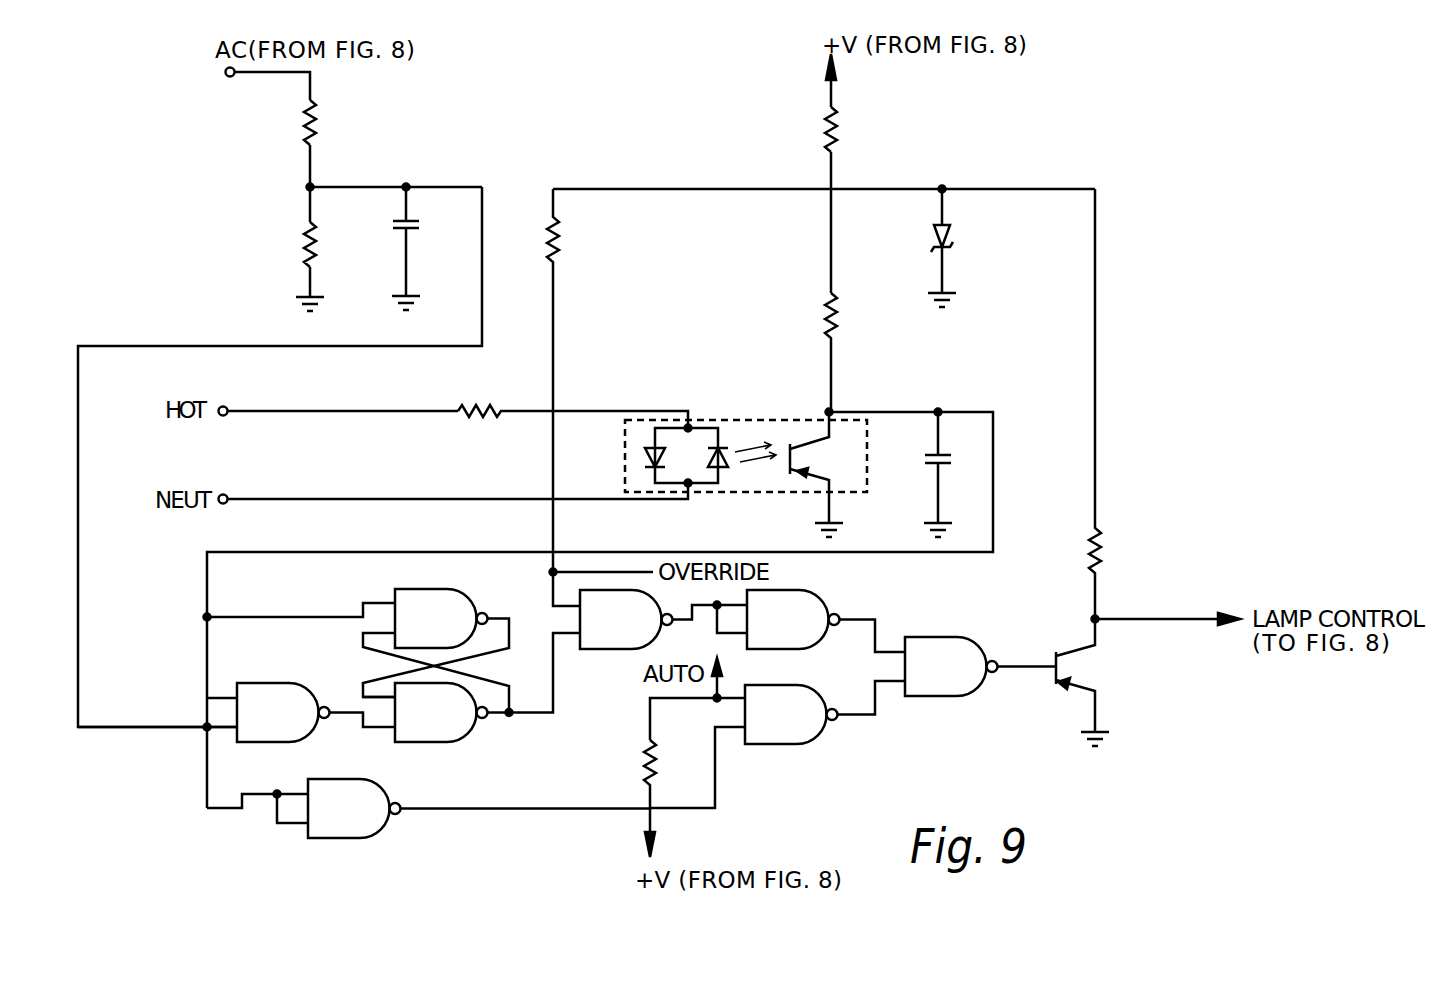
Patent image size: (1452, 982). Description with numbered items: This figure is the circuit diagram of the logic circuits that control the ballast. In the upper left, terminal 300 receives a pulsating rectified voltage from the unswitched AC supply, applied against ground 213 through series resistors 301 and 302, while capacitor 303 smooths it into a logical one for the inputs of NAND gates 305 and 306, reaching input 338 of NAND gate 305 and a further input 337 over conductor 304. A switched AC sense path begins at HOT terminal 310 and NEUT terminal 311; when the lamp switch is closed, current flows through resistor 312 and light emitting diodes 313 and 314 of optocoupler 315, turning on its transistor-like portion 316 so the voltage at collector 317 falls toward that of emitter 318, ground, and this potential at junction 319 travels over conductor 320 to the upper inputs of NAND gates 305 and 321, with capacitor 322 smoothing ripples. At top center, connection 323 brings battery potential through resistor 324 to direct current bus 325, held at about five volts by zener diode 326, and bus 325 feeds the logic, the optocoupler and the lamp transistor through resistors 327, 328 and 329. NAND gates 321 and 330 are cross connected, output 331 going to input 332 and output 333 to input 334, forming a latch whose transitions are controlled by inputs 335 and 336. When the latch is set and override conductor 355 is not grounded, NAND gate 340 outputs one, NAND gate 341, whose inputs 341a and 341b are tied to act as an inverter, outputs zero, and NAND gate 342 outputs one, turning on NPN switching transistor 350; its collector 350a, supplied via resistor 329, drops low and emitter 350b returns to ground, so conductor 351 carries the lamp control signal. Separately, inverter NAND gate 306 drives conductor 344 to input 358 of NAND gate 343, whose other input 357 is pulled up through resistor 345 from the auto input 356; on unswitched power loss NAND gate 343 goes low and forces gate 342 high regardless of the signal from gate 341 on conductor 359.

The terminal 300 is at (232, 77).
The resistor 301 is at (308, 138).
The resistor 302 is at (308, 245).
The capacitor 303 is at (402, 229).
The ground 213 is at (306, 306).
The conductor 304 is at (80, 559).
The HOT terminal 310 is at (222, 416).
The NEUT terminal 311 is at (222, 504).
The resistor 312 is at (488, 404).
The light emitting diode 313 is at (645, 457).
The light emitting diode 314 is at (726, 480).
The optocoupler 315 is at (708, 421).
The transistor-like portion 316 is at (832, 459).
The collector 317 is at (812, 434).
The emitter 318 is at (816, 488).
The junction 319 is at (832, 410).
The conductor 320 is at (968, 411).
The capacitor 322 is at (951, 464).
The connection 323 is at (829, 83).
The resistor 324 is at (840, 119).
The direct current bus 325 is at (718, 188).
The zener diode 326 is at (950, 235).
The resistor 327 is at (558, 246).
The resistor 328 is at (838, 321).
The resistor 329 is at (1100, 541).
The NAND gate 305 is at (283, 712).
The NAND gate 306 is at (304, 808).
The NAND gate 321 is at (441, 618).
The NAND gate 330 is at (441, 712).
The output 331 is at (487, 614).
The input 332 is at (362, 695).
The output 333 is at (510, 721).
The input 334 is at (363, 637).
The input 335 is at (363, 611).
The input 336 is at (364, 728).
The conductor 337 is at (207, 656).
The input 338 is at (207, 726).
The NAND gate 340 is at (626, 619).
The NAND gate 341 is at (793, 619).
The input 341a is at (740, 602).
The input 341b is at (737, 634).
The NAND gate 342 is at (951, 666).
The NAND gate 343 is at (791, 714).
The conductor 344 is at (470, 809).
The resistor 345 is at (645, 770).
The NPN switching transistor 350 is at (1100, 672).
The collector 350a is at (1073, 645).
The emitter 350b is at (1080, 690).
The conductor 351 is at (1159, 619).
The override conductor 355 is at (594, 570).
The auto input 356 is at (722, 673).
The input 357 is at (729, 704).
The input 358 is at (716, 776).
The conductor 359 is at (884, 631).